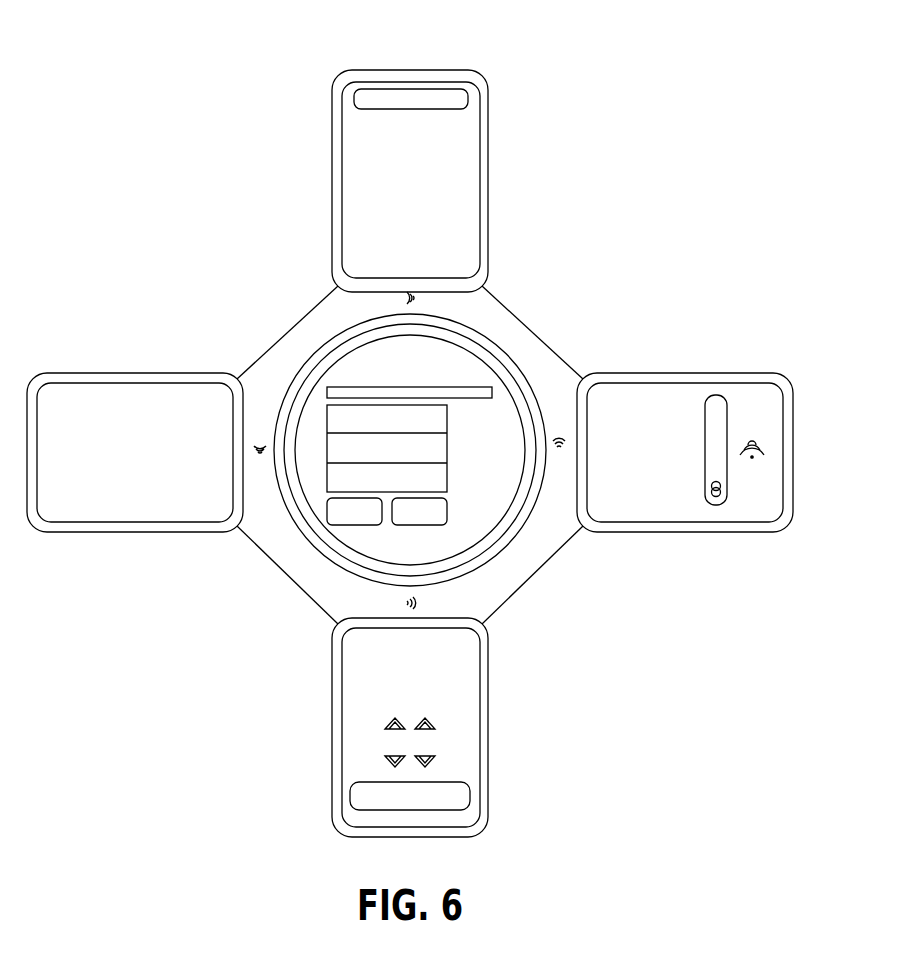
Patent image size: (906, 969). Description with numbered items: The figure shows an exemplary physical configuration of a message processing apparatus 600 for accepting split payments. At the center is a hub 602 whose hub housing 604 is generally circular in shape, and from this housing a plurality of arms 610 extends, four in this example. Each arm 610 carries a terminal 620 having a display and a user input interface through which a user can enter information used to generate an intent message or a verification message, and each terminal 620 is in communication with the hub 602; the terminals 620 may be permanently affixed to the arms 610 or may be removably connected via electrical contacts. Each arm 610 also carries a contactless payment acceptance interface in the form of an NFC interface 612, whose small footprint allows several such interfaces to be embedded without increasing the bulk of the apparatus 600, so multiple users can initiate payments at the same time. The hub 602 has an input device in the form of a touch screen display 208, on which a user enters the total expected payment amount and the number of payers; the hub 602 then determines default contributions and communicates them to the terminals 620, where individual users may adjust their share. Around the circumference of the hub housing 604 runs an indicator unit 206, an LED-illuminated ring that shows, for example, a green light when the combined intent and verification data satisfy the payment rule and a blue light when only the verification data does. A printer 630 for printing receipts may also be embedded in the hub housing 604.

The message processing apparatus 600 is at (155, 121).
The hub 602 is at (525, 353).
The hub housing 604 is at (503, 543).
The indicator unit 206 is at (316, 532).
The touch screen display 208 is at (338, 437).
The printer 630 is at (444, 388).
The arm 610 is at (334, 299).
The NFC interface 612 is at (256, 450).
The terminal 620 is at (461, 161).